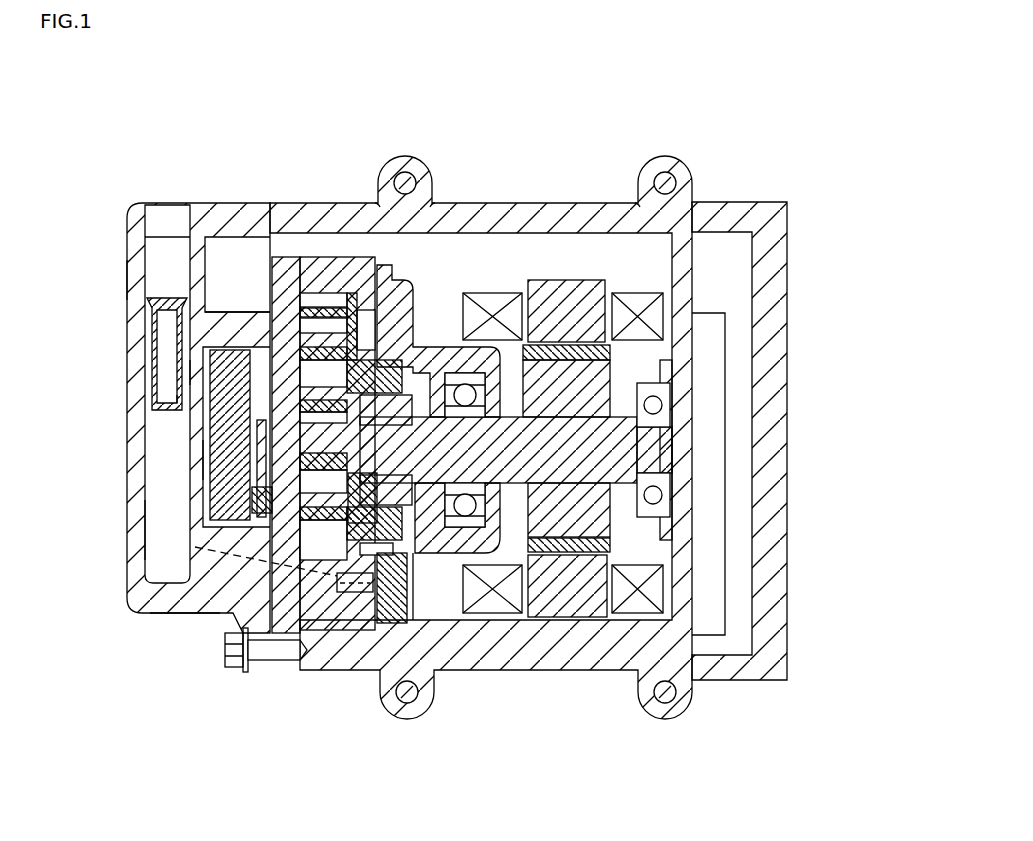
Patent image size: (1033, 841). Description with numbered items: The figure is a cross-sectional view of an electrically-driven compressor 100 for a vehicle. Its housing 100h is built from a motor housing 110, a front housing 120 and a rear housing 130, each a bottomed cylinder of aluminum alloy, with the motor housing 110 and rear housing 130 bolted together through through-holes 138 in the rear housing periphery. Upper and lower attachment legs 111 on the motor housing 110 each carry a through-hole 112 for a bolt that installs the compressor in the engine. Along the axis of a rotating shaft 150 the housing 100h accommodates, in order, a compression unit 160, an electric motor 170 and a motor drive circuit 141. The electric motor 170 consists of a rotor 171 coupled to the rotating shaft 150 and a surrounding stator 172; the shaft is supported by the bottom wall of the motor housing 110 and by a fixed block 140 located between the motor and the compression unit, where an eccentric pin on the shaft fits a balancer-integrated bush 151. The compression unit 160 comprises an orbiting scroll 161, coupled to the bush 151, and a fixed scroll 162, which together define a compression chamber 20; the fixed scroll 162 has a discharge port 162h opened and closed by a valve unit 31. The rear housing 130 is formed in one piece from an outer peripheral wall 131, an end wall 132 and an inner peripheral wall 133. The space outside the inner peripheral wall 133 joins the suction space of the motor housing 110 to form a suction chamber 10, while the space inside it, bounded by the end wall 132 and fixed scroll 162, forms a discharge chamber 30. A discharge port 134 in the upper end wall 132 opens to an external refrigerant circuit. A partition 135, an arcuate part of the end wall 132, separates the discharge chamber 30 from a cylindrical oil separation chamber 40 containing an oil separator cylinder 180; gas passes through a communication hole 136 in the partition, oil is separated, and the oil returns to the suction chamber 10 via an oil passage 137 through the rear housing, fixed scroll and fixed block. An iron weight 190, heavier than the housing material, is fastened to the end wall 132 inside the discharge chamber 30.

The electrically-driven compressor 100 is at (121, 168).
The housing 100h is at (712, 70).
The suction chamber 10 is at (232, 248).
The compression chamber 20 is at (316, 372).
The discharge chamber 30 is at (200, 484).
The valve unit 31 is at (258, 433).
The oil separation chamber 40 is at (160, 528).
The motor housing 110 is at (497, 222).
The attachment legs 111 is at (386, 165).
The through-hole 112 is at (406, 180).
The front housing 120 is at (735, 222).
The rear housing 130 is at (248, 232).
The outer peripheral wall 131 is at (180, 614).
The end wall 132 is at (128, 284).
The inner peripheral wall 133 is at (241, 310).
The discharge port 134 is at (184, 218).
The partition 135 is at (200, 461).
The communication hole 136 is at (195, 369).
The oil passage 137 is at (195, 547).
The through-holes 138 is at (257, 662).
The fixed block 140 is at (413, 580).
The motor drive circuit 141 is at (707, 373).
The rotating shaft 150 is at (570, 455).
The balancer-integrated bush 151 is at (423, 483).
The compression unit 160 is at (352, 722).
The orbiting scroll 161 is at (353, 502).
The fixed scroll 162 is at (287, 545).
The discharge port 162h is at (184, 402).
The electric motor 170 is at (478, 756).
The rotor 171 is at (562, 512).
The stator 172 is at (492, 600).
The oil separator cylinder 180 is at (149, 328).
The weight 190 is at (224, 507).